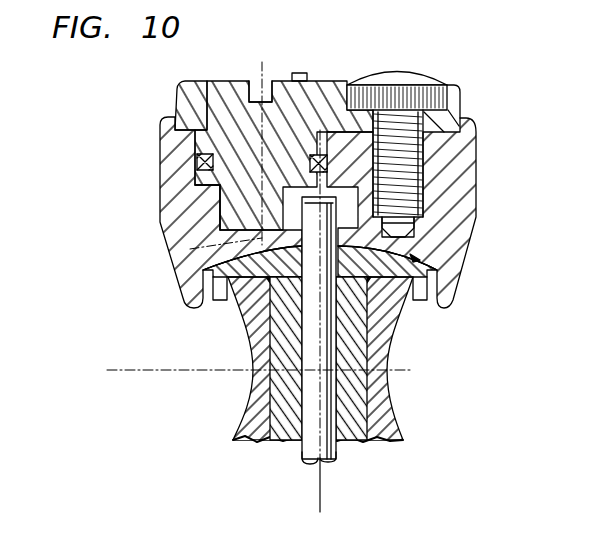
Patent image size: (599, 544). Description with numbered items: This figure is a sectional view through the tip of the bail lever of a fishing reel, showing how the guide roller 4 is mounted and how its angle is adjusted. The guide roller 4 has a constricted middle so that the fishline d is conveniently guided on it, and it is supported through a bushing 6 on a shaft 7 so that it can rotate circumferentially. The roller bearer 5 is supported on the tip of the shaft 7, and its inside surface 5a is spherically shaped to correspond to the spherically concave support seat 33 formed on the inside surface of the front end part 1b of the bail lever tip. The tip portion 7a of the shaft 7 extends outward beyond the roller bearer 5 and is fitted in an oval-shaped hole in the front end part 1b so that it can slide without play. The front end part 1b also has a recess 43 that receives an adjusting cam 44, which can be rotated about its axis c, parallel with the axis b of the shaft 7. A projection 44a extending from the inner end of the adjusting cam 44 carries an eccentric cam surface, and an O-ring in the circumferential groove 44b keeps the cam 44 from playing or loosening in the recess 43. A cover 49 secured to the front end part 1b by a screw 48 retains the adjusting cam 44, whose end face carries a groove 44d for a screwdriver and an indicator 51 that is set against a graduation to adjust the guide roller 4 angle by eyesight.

The front end part 1b is at (470, 142).
The adjusting cam 44 is at (241, 128).
The projection 44a is at (230, 202).
The circumferential groove 44b is at (214, 162).
The groove 44d is at (254, 84).
The indicator 51 is at (300, 74).
The recess 43 is at (215, 230).
The screw 48 is at (431, 134).
The cover 49 is at (460, 92).
The tip portion 7a is at (420, 197).
The spherically concave support seat 33 is at (432, 232).
The roller bearer 5 is at (328, 265).
The inside surface 5a is at (432, 256).
The axis of the adjusting cam c is at (205, 252).
The guide roller 4 is at (383, 340).
The bushing 6 is at (357, 405).
The shaft 7 is at (323, 457).
The axis of the shaft b is at (317, 497).
The fishline d is at (130, 372).